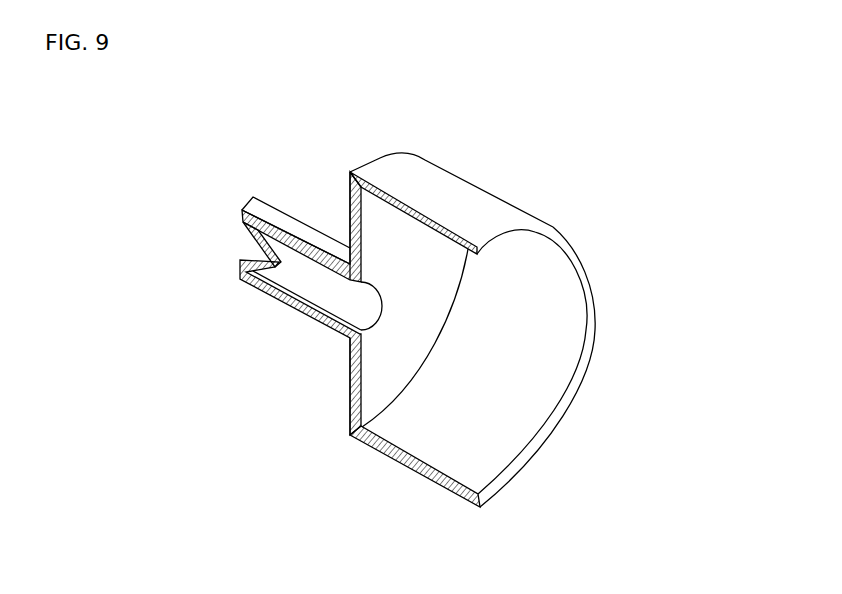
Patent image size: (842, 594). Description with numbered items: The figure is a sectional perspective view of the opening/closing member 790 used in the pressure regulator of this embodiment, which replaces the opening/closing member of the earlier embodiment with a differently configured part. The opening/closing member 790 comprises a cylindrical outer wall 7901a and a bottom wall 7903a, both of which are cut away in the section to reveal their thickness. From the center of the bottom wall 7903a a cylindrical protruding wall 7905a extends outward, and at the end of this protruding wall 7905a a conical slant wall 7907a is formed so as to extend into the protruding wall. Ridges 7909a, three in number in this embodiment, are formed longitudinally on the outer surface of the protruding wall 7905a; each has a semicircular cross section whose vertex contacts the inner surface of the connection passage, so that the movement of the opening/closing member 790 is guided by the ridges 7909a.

The opening/closing member 790 is at (634, 254).
The cylindrical outer wall 7901a is at (411, 470).
The bottom wall 7903a is at (350, 390).
The cylindrical protruding wall 7905a is at (279, 298).
The conical slant wall 7907a is at (257, 254).
The ridges 7909a is at (291, 214).